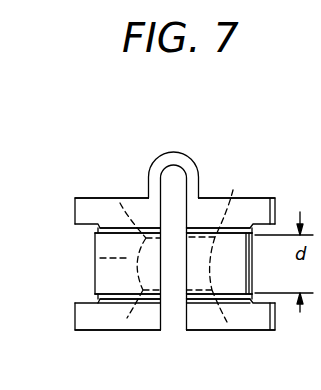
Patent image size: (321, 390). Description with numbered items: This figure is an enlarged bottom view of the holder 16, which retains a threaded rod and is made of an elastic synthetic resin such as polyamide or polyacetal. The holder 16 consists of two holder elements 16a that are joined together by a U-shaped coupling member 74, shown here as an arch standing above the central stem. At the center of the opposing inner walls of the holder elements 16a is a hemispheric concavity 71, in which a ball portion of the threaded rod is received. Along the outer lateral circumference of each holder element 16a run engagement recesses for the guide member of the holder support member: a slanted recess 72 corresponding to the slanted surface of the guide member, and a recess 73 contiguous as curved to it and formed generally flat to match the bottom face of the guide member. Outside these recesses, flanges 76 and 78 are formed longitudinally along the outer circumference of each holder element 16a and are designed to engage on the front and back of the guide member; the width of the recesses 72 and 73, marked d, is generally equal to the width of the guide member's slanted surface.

The holder 16 is at (116, 185).
The holder element 16a is at (125, 330).
The hemispheric concavity 71 is at (130, 262).
The slanted recess 72 is at (98, 288).
The recess 73 is at (232, 220).
The U-shaped coupling member 74 is at (175, 157).
The flange 76 is at (77, 215).
The flange 78 is at (98, 323).